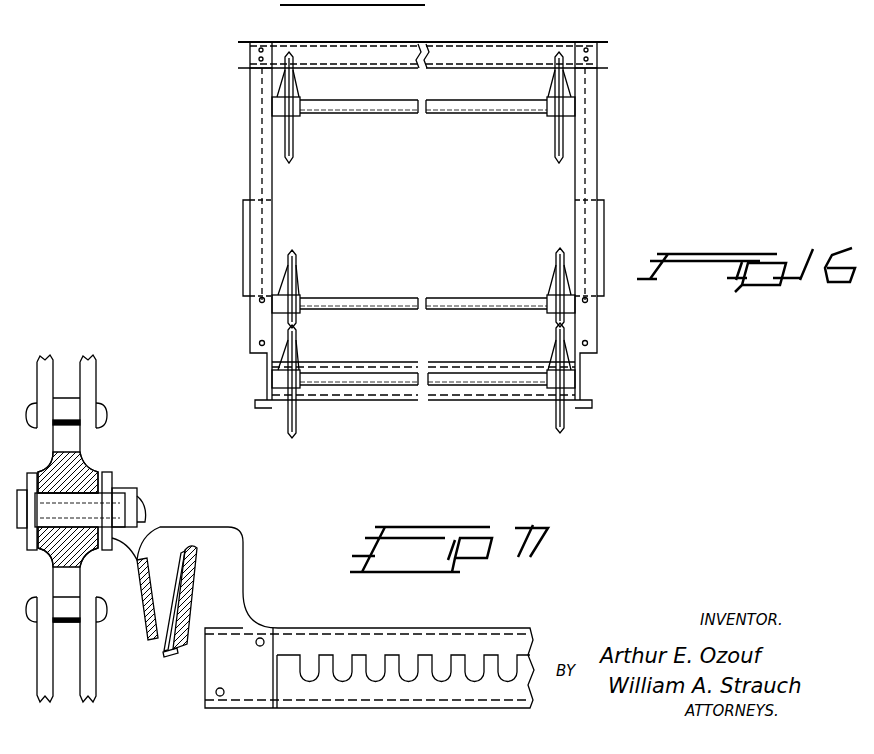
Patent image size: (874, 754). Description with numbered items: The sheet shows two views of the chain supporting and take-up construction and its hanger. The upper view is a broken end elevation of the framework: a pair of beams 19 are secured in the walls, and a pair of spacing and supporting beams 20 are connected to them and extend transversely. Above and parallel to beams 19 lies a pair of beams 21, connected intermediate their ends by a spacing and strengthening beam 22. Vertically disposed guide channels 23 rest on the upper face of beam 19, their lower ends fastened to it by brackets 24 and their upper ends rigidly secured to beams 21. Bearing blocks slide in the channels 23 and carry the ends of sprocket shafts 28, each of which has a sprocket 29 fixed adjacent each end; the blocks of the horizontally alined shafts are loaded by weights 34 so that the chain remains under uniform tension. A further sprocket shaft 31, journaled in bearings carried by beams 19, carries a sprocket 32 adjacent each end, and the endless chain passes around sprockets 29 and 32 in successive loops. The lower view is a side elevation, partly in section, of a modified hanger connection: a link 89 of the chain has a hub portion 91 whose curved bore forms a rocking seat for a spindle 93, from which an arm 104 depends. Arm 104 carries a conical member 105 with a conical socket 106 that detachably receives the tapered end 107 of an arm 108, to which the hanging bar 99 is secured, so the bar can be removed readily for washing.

In FIG. 16, the beam 19 is at (422, 365).
In FIG. 16, the spacing and supporting beam 20 is at (497, 392).
In FIG. 16, the beam 21 is at (238, 68).
In FIG. 16, the spacing and strengthening beam 22 is at (363, 60).
In FIG. 16, the guide channel 23 is at (265, 210).
In FIG. 16, the bracket 24 is at (256, 343).
In FIG. 16, the sprocket shaft 28 is at (470, 105).
In FIG. 16, the sprocket 29 is at (293, 140).
In FIG. 16, the sprocket shaft 31 is at (470, 380).
In FIG. 16, the sprocket 32 is at (292, 362).
In FIG. 16, the weight 34 is at (243, 282).
In FIG. 17, the link 89 is at (68, 458).
In FIG. 17, the hub portion 91 is at (55, 478).
In FIG. 17, the spindle 93 is at (120, 497).
In FIG. 17, the hanging bar 99 is at (475, 645).
In FIG. 17, the arm 104 is at (216, 552).
In FIG. 17, the conical member 105 is at (177, 684).
In FIG. 17, the conical socket 106 is at (195, 600).
In FIG. 17, the tapered end 107 is at (172, 580).
In FIG. 17, the arm 108 is at (237, 612).